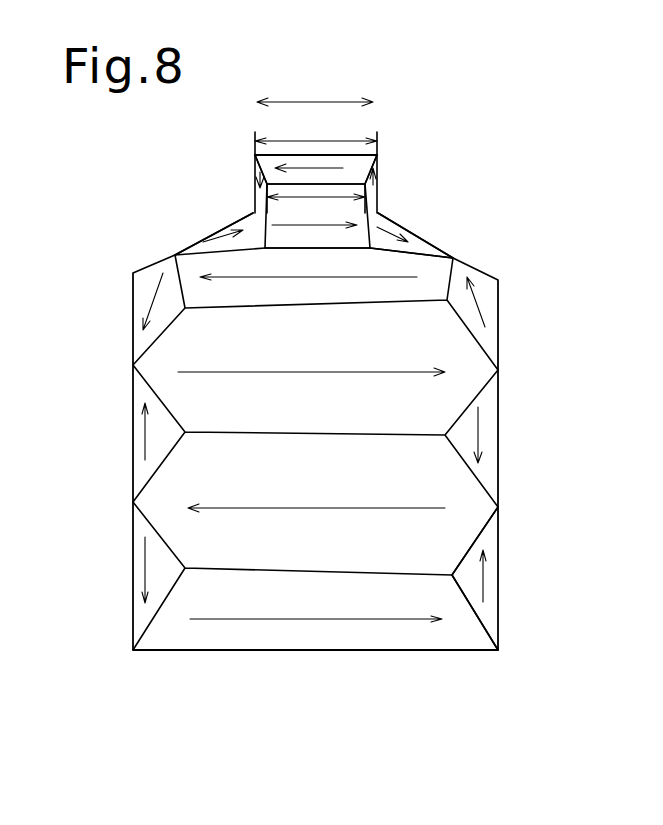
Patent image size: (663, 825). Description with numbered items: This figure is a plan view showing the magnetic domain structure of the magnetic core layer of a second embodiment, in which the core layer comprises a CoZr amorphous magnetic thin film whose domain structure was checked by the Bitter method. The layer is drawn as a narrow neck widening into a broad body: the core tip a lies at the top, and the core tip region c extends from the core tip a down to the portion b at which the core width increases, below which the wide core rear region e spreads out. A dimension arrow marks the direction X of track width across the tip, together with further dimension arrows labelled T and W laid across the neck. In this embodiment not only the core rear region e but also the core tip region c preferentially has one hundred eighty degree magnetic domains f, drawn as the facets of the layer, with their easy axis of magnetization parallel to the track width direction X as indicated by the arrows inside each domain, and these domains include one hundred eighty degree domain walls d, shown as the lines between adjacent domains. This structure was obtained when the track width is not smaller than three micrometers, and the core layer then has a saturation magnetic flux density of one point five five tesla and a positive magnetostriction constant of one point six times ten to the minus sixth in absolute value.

The core tip a is at (287, 154).
The portion increasing in core width b is at (257, 214).
The core tip region c is at (380, 210).
The 180° domain wall d is at (294, 185).
The core rear region e is at (490, 615).
The 180° magnetic domain f is at (307, 633).
The track width direction X is at (315, 87).
The dimension T is at (316, 127).
The dimension W is at (316, 211).